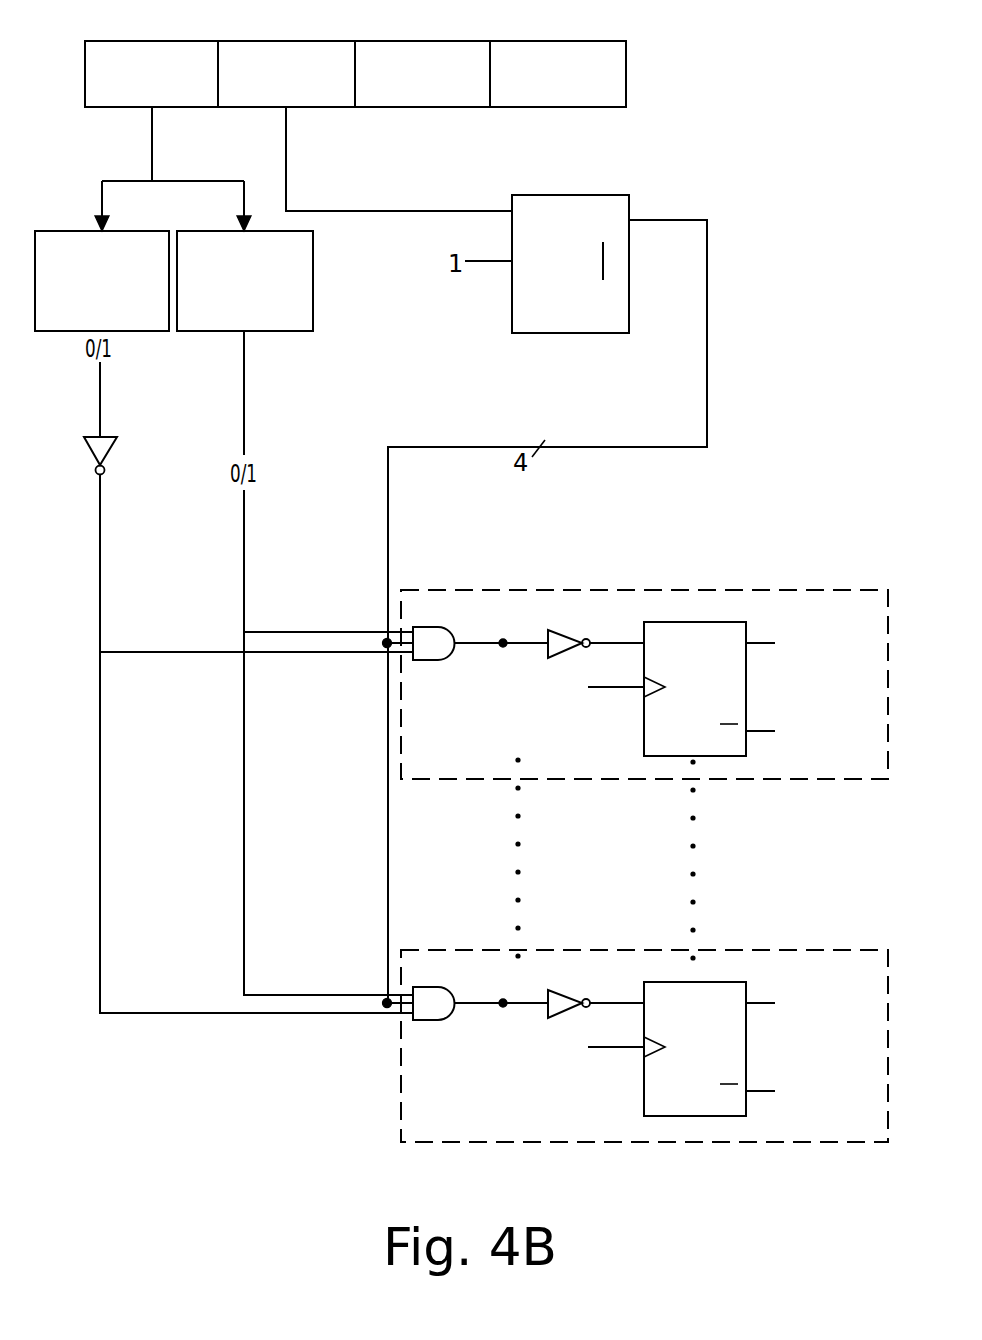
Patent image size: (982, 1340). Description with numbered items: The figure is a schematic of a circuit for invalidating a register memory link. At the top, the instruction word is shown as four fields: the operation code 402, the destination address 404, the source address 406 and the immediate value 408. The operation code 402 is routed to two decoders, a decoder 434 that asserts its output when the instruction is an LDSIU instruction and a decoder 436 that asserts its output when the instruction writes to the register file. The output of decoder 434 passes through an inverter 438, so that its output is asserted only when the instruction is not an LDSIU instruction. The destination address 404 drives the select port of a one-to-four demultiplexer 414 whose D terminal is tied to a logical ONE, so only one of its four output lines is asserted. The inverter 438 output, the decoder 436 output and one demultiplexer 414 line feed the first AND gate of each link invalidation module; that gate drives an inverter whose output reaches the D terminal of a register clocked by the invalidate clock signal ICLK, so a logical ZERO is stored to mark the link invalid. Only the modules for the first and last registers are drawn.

The operation code 402 is at (150, 41).
The destination address 404 is at (285, 41).
The source address 406 is at (423, 41).
The immediate value 408 is at (560, 41).
The demultiplexer 414 is at (592, 333).
The decoder 434 is at (137, 331).
The decoder 436 is at (278, 331).
The inverter 438 is at (108, 452).